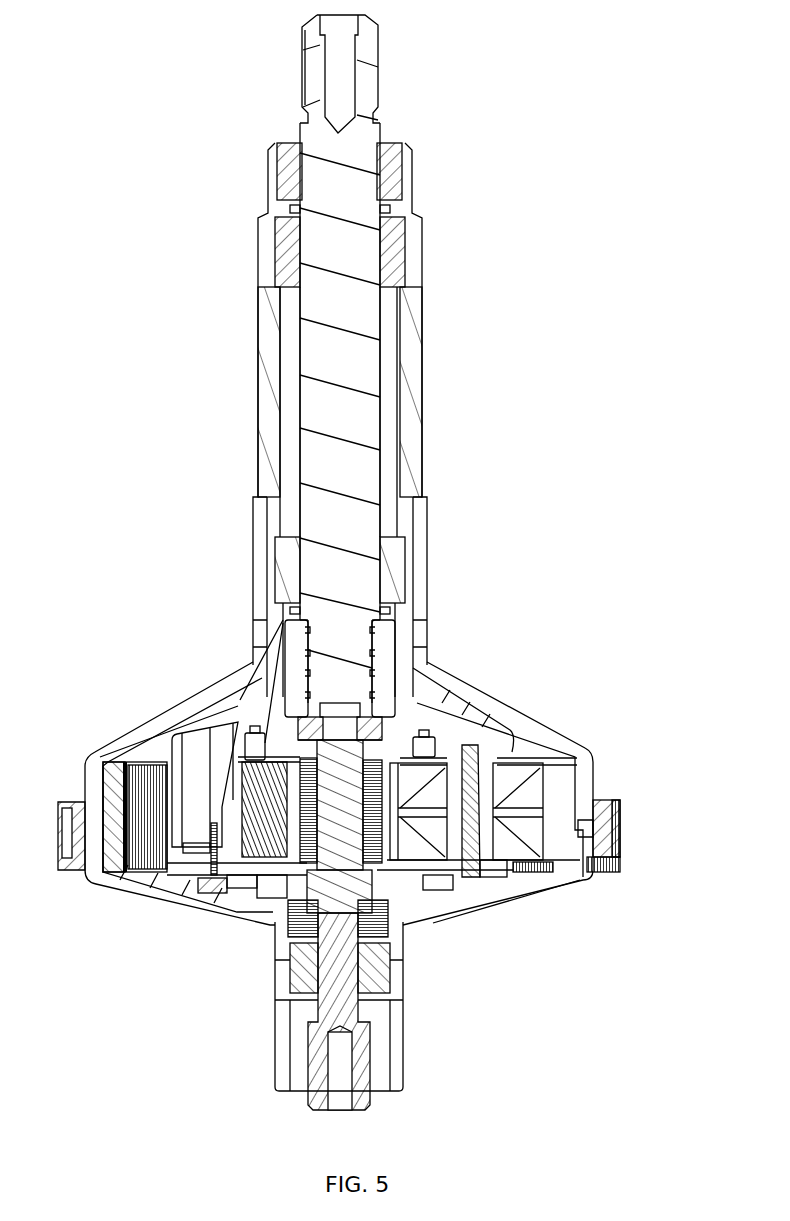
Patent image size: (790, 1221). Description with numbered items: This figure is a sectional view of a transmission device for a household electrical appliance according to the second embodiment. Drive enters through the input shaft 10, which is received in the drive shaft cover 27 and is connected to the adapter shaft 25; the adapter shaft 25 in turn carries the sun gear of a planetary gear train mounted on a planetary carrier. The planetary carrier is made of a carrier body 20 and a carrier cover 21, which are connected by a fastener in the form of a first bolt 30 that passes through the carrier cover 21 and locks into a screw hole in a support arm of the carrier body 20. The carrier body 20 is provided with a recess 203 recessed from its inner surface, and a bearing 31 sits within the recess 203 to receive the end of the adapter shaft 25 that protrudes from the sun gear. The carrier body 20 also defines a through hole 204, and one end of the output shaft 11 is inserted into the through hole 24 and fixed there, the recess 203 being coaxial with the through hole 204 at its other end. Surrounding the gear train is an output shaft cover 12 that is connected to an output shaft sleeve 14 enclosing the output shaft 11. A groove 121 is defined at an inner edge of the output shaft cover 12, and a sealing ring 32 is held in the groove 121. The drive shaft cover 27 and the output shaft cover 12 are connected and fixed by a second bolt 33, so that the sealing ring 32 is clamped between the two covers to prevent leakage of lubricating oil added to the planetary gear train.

The input shaft 10 is at (340, 997).
The output shaft 11 is at (350, 447).
The output shaft cover 12 is at (517, 722).
The groove 121 is at (590, 803).
The output shaft sleeve 14 is at (408, 360).
The carrier body 20 is at (210, 753).
The carrier cover 21 is at (190, 872).
The recess 203 is at (357, 717).
The through hole 204 is at (373, 657).
The through hole 24 is at (465, 770).
The adapter shaft 25 is at (333, 882).
The drive shaft cover 27 is at (505, 897).
The first bolt 30 is at (210, 880).
The bearing 31 is at (383, 722).
The sealing ring 32 is at (618, 848).
The second bolt 33 is at (605, 872).